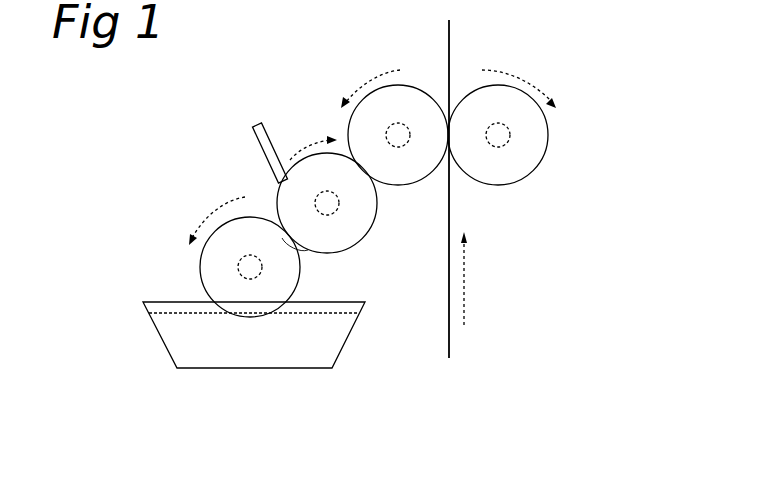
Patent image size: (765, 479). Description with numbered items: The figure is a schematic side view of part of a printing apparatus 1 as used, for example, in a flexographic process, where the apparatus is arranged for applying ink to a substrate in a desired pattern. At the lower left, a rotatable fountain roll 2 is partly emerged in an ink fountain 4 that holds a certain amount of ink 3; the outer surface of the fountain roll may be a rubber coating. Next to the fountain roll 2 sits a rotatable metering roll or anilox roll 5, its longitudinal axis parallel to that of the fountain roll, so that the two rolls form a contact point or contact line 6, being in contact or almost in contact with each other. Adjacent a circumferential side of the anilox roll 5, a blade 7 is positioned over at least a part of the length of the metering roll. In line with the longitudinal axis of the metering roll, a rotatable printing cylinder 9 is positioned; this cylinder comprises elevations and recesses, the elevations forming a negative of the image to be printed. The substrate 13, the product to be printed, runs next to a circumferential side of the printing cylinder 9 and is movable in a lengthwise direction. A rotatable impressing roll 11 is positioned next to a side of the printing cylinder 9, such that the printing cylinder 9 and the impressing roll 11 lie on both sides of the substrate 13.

The printing apparatus 1 is at (536, 225).
The fountain roll 2 is at (217, 269).
The ink 3 is at (228, 367).
The ink fountain 4 is at (160, 335).
The anilox roll 5 is at (362, 217).
The contact line 6 is at (293, 247).
The blade 7 is at (259, 145).
The printing cylinder 9 is at (362, 127).
The impressing roll 11 is at (537, 142).
The substrate 13 is at (448, 42).